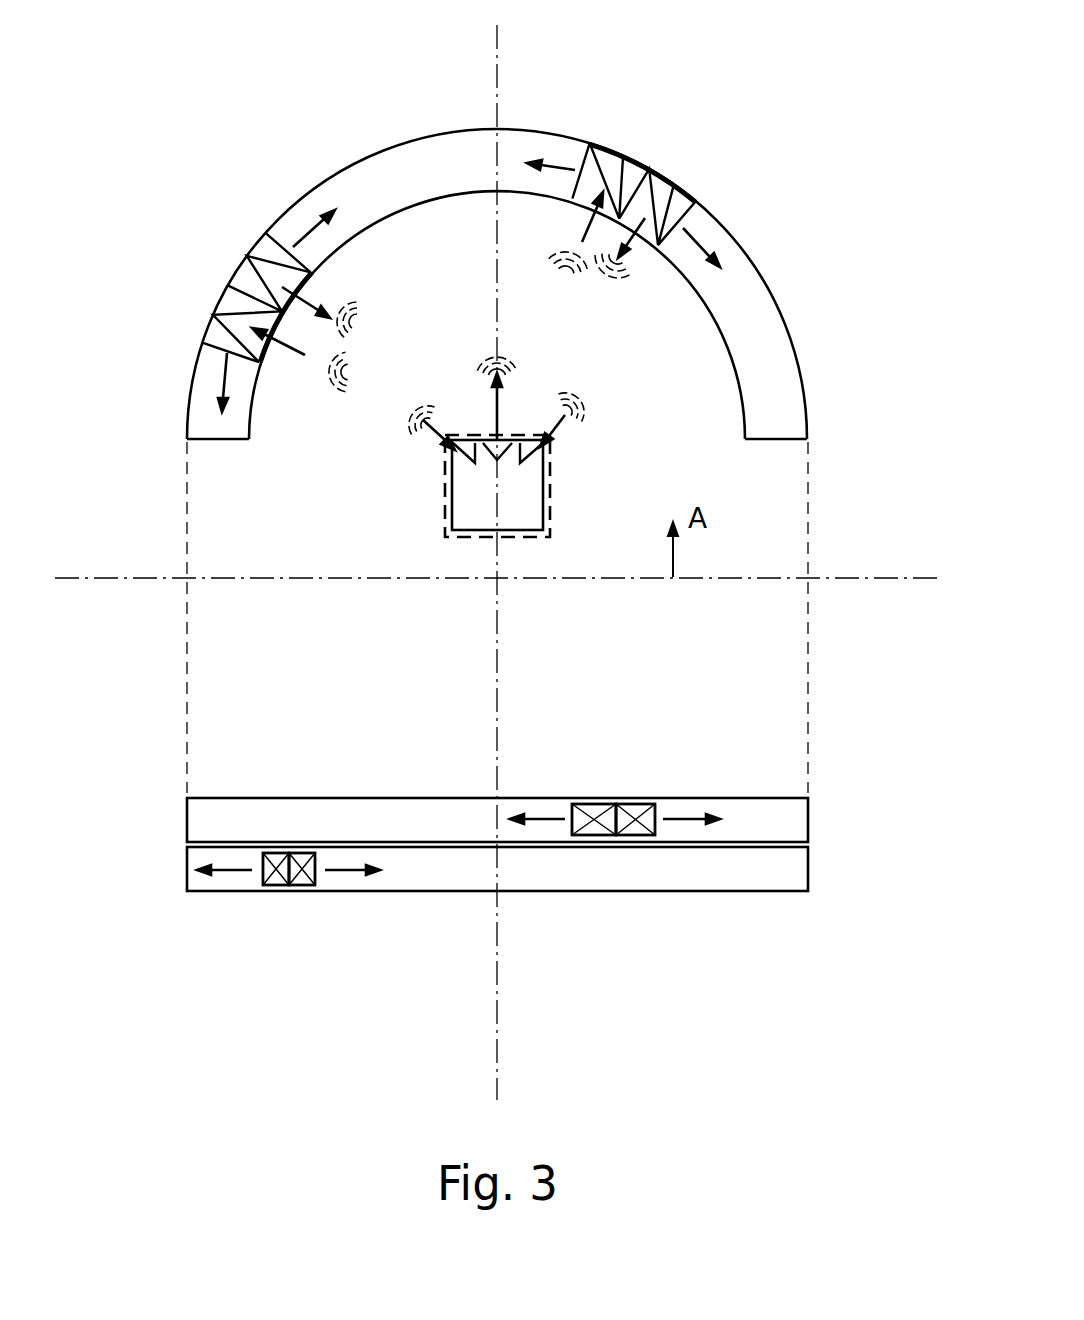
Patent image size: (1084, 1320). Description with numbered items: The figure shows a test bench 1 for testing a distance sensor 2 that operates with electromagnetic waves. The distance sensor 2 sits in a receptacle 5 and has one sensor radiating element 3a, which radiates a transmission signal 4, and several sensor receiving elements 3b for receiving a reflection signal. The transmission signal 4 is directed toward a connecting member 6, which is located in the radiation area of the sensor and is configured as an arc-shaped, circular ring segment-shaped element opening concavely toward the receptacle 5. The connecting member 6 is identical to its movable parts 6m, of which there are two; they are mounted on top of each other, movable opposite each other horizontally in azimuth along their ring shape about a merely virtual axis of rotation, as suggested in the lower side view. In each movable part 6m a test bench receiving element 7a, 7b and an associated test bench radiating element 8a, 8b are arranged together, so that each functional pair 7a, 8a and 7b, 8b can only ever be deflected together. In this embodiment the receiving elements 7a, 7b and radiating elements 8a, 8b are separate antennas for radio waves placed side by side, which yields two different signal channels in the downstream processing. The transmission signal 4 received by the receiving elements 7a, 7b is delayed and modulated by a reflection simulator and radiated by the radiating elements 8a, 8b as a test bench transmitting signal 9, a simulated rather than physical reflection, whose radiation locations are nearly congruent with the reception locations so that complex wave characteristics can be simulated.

The test bench 1 is at (213, 162).
The distance sensor 2 is at (497, 485).
The sensor radiating element 3a is at (497, 457).
The sensor receiving element 3b is at (547, 445).
The transmission signal 4 is at (325, 388).
The receptacle 5 is at (550, 527).
The connecting member 6 is at (777, 355).
The movable part of the connecting member 6m is at (187, 818).
The test bench receiving element 7a is at (217, 308).
The test bench receiving element 7b is at (627, 157).
The test bench radiating element 8a is at (247, 257).
The test bench radiating element 8b is at (677, 182).
The test bench transmitting signal 9 is at (352, 303).